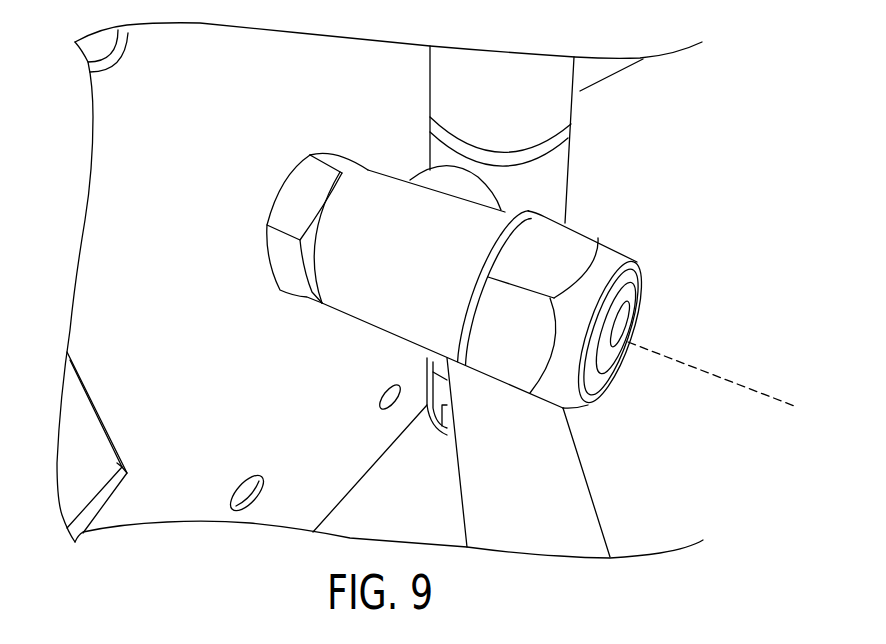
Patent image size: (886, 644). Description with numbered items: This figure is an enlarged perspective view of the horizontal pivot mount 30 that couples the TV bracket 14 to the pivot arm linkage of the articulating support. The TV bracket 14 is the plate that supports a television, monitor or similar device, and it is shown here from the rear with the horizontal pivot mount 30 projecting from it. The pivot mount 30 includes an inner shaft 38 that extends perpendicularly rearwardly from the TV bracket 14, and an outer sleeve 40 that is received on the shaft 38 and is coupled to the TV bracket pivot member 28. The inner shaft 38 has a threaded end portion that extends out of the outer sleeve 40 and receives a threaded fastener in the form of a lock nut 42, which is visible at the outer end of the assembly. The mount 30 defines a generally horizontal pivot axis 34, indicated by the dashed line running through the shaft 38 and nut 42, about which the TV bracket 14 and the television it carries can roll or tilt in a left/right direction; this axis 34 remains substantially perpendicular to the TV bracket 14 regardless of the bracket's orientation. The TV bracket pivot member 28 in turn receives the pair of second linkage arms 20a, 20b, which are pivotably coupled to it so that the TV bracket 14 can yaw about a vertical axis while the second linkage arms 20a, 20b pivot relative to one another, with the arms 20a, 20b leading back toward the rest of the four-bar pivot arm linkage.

The TV bracket 14 is at (333, 467).
The second linkage arm 20a is at (590, 487).
The second linkage arm 20b is at (628, 68).
The TV bracket pivot member 28 is at (580, 158).
The horizontal pivot mount 30 is at (397, 320).
The horizontal pivot axis 34 is at (722, 377).
The inner shaft 38 is at (630, 313).
The outer sleeve 40 is at (387, 173).
The lock nut 42 is at (590, 233).